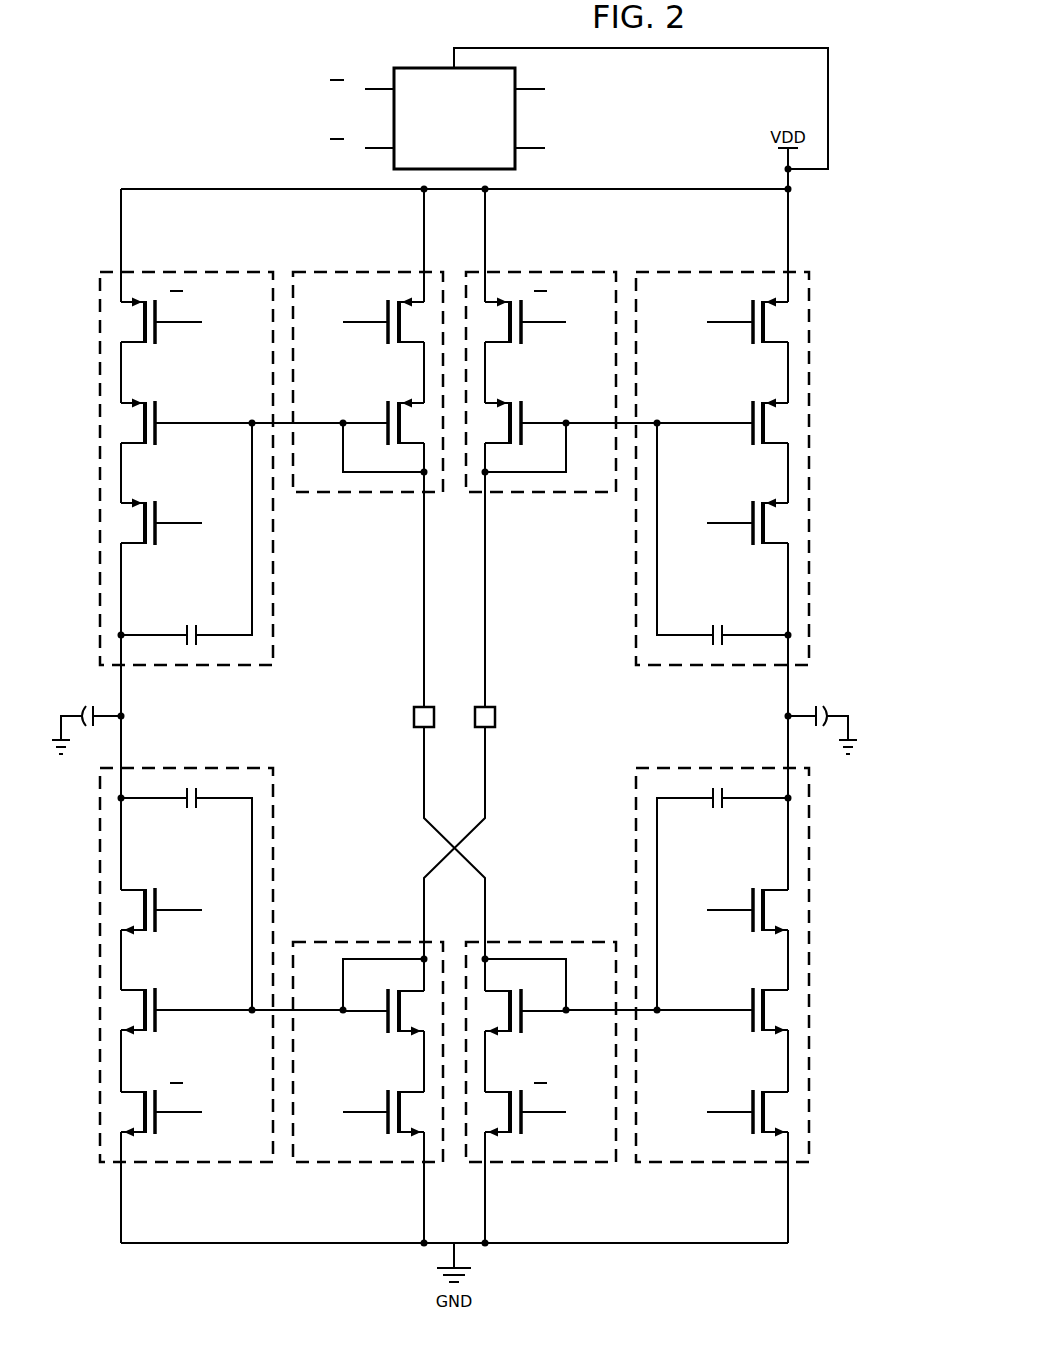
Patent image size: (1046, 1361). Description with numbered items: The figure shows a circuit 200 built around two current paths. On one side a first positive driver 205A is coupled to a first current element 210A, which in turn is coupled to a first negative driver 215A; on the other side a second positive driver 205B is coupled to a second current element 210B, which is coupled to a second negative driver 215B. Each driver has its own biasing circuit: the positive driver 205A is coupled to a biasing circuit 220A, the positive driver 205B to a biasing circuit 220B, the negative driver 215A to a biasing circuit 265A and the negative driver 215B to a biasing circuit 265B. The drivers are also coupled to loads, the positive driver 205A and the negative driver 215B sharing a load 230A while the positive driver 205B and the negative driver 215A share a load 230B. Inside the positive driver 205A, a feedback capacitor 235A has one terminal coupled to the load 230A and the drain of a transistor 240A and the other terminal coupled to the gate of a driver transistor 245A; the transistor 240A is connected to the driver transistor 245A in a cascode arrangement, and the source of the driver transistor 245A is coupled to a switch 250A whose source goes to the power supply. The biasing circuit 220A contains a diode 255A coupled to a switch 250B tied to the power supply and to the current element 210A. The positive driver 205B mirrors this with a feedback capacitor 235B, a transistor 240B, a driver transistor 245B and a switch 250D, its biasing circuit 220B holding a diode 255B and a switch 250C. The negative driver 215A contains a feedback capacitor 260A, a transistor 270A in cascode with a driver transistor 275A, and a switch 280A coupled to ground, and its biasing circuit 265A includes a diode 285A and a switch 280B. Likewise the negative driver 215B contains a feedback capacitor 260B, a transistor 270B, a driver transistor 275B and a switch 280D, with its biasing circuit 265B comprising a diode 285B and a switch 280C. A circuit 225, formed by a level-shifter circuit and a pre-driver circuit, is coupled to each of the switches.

The circuit 200 is at (242, 149).
The first positive driver 205A is at (176, 269).
The second positive driver 205B is at (733, 269).
The first current element 210A is at (414, 712).
The second current element 210B is at (495, 712).
The first negative driver 215A is at (733, 1165).
The second negative driver 215B is at (176, 1165).
The biasing circuit 220A is at (342, 269).
The biasing circuit 220B is at (567, 269).
The circuit 225 is at (434, 140).
The load 230A is at (80, 705).
The load 230B is at (829, 705).
The feedback capacitor 235A is at (188, 622).
The feedback capacitor 235B is at (721, 622).
The transistor 240A is at (158, 520).
The transistor 240B is at (751, 520).
The driver transistor 245A is at (158, 418).
The driver transistor 245B is at (751, 418).
The switch 250A is at (158, 332).
The switch 250B is at (386, 332).
The switch 250C is at (523, 332).
The switch 250D is at (751, 332).
The diode 255A is at (386, 418).
The diode 255B is at (523, 418).
The feedback capacitor 260A is at (719, 811).
The feedback capacitor 260B is at (190, 811).
The biasing circuit 265A is at (567, 1165).
The biasing circuit 265B is at (342, 1165).
The transistor 270A is at (751, 918).
The transistor 270B is at (158, 918).
The driver transistor 275A is at (751, 1018).
The driver transistor 275B is at (158, 1018).
The switch 280A is at (751, 1120).
The switch 280B is at (523, 1120).
The switch 280C is at (386, 1120).
The switch 280D is at (158, 1120).
The diode 285A is at (523, 1020).
The diode 285B is at (386, 1020).